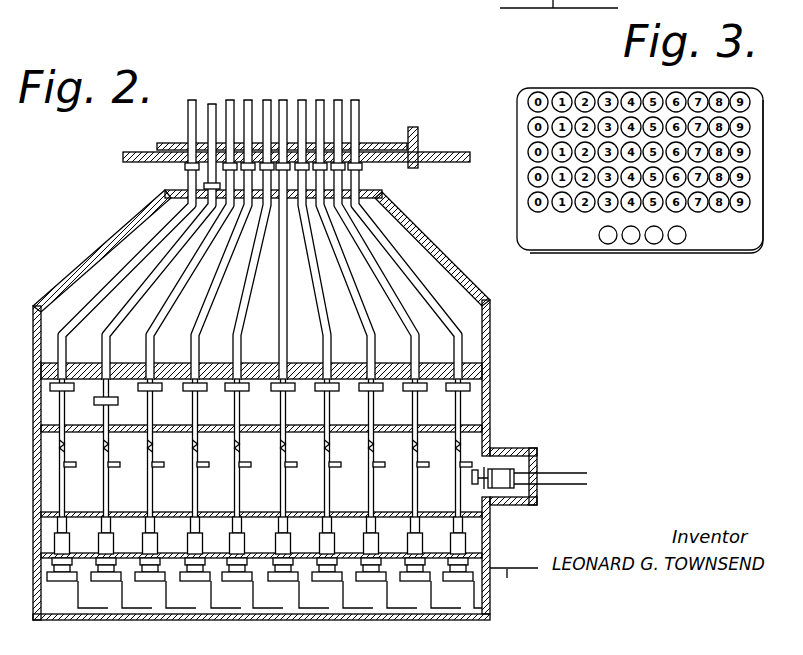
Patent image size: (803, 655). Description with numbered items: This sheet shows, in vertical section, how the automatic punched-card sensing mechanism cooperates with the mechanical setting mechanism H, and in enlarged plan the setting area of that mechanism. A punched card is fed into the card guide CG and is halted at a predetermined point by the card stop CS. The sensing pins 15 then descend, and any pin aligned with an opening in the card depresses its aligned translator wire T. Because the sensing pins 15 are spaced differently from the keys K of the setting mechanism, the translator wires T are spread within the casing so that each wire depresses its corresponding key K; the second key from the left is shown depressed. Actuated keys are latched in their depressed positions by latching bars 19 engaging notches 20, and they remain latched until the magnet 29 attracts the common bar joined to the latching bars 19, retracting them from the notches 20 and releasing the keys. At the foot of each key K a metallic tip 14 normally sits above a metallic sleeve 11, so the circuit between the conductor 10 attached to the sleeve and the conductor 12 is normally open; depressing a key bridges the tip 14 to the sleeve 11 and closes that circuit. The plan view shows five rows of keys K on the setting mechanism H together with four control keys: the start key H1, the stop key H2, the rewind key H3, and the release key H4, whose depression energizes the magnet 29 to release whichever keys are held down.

In FIG. 2, the sensing pins 15 is at (337, 100).
In FIG. 2, the card guide CG is at (168, 141).
In FIG. 2, the card stop CS is at (430, 133).
In FIG. 2, the translator wires T is at (178, 296).
In FIG. 2, the keys K is at (324, 410).
In FIG. 3, the keys K is at (740, 96).
In FIG. 2, the notches 20 is at (335, 447).
In FIG. 2, the latching bars 19 is at (370, 466).
In FIG. 2, the magnet 29 is at (512, 493).
In FIG. 2, the metallic tip 14 is at (65, 527).
In FIG. 2, the metallic sleeve 11 is at (153, 542).
In FIG. 2, the conductor 12 is at (434, 600).
In FIG. 2, the conductor 10 is at (285, 405).
In FIG. 3, the setting mechanism H is at (577, 87).
In FIG. 3, the start key H1 is at (690, 270).
In FIG. 3, the stop key H2 is at (656, 245).
In FIG. 3, the rewind key H3 is at (633, 245).
In FIG. 3, the release key H4 is at (612, 244).